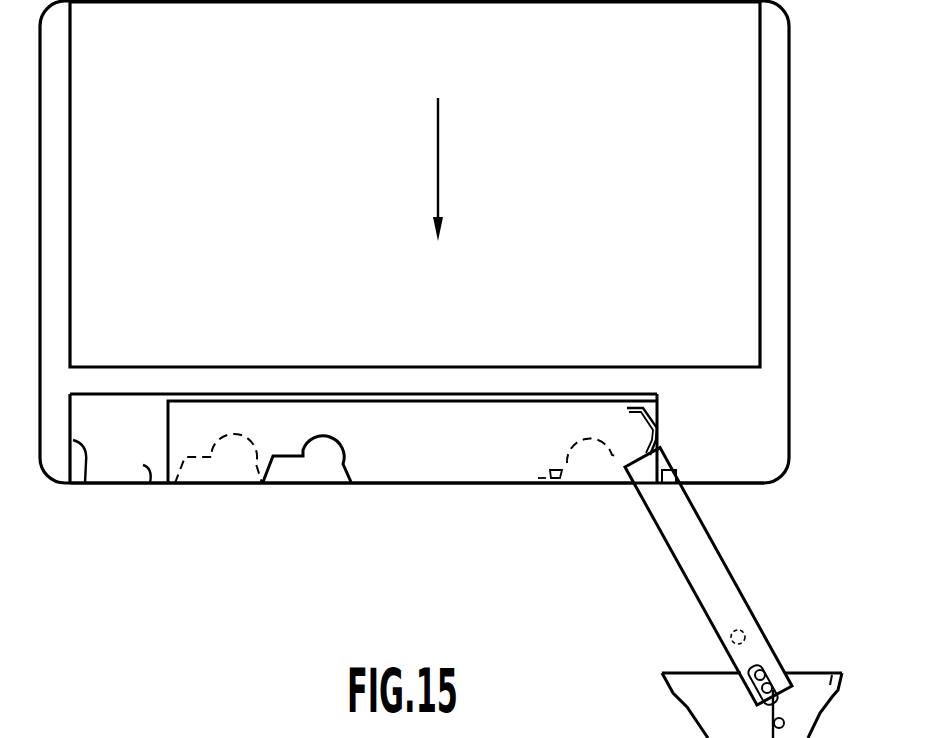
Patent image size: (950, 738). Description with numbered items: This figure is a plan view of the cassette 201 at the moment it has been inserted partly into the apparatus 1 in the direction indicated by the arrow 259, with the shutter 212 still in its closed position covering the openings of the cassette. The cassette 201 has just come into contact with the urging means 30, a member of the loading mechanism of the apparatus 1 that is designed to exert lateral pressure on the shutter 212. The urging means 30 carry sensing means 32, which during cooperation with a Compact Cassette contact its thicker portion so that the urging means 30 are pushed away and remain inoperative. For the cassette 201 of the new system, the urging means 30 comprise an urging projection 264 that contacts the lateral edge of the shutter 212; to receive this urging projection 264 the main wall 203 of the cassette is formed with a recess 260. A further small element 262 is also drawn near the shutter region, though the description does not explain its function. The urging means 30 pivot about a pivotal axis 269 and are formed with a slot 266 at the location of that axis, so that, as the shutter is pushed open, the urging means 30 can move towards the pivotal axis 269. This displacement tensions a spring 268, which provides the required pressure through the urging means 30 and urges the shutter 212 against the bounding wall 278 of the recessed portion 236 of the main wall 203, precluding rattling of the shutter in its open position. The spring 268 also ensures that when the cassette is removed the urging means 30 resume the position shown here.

The apparatus 1 is at (830, 685).
The urging means 30 is at (707, 565).
The sensing means 32 is at (627, 408).
The cassette 201 is at (790, 276).
The main wall 203 is at (770, 431).
The shutter 212 is at (410, 468).
The recessed portion 236 is at (150, 483).
The arrow 259 is at (438, 162).
The recess 260 is at (678, 474).
The latch projection 262 is at (553, 467).
The urging projection 264 is at (657, 486).
The slot 266 is at (727, 668).
The spring 268 is at (757, 659).
The pivotal axis 269 is at (757, 692).
The bounding wall 278 is at (82, 483).